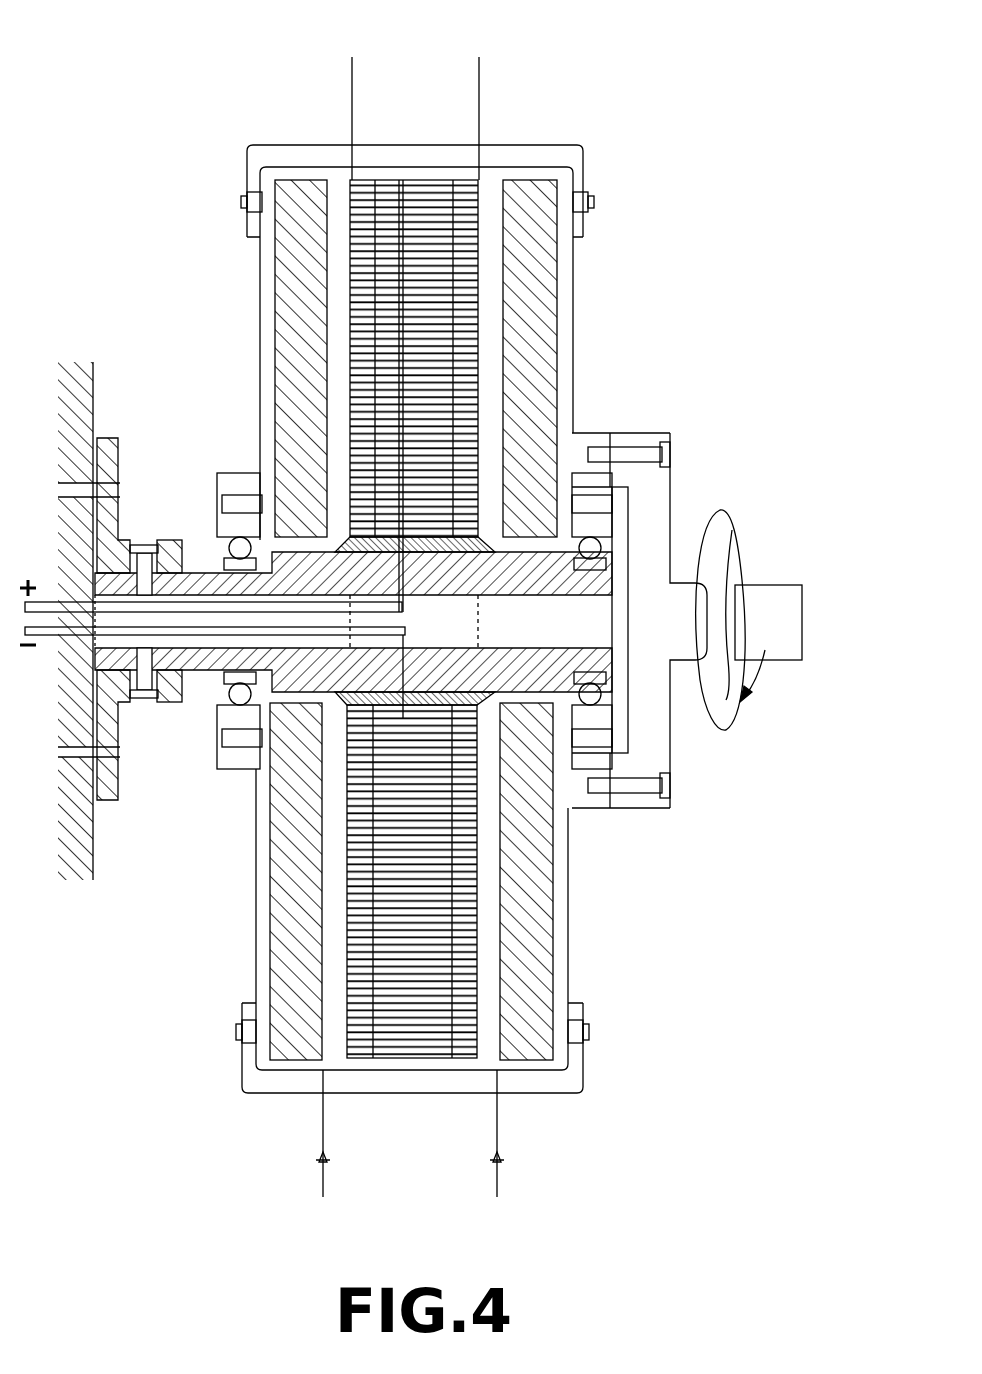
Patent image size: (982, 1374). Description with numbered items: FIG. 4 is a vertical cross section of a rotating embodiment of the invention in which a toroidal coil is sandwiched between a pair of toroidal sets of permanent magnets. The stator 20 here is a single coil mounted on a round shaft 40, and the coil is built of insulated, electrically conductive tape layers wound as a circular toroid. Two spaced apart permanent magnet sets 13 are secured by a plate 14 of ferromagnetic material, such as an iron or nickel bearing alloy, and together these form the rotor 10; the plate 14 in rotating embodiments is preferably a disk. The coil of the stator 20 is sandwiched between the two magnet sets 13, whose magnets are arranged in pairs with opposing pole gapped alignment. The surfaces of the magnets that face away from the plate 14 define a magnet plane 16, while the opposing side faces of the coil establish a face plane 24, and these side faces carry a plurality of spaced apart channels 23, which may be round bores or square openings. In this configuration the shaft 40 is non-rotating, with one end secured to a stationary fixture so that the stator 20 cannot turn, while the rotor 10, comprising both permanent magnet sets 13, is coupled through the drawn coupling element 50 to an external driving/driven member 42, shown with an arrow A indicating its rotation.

The rotor 10 is at (228, 926).
The magnet set 13 is at (297, 205).
The plate 14 is at (574, 318).
The magnet plane 16 is at (427, 1140).
The stator 20 is at (490, 198).
The channels 23 is at (468, 447).
The face plane 24 is at (479, 72).
The shaft 40 is at (200, 667).
The external driving/driven member 42 is at (658, 508).
The flange plate 50 is at (592, 546).
The rotation direction A is at (745, 533).